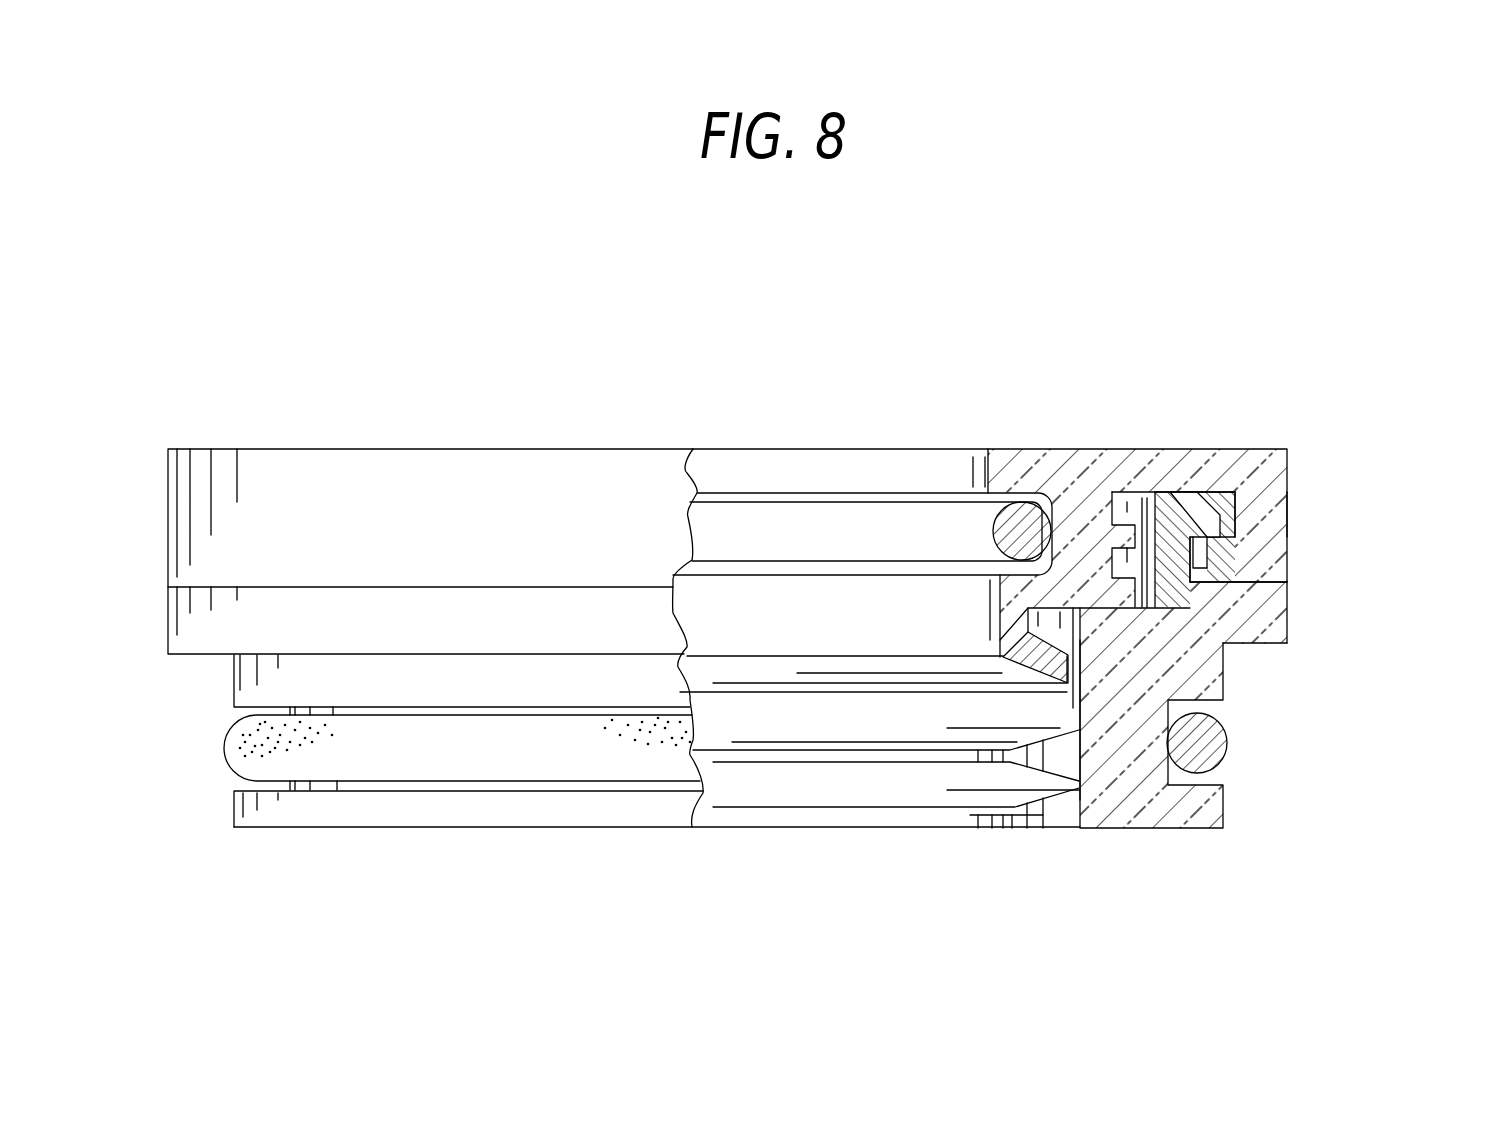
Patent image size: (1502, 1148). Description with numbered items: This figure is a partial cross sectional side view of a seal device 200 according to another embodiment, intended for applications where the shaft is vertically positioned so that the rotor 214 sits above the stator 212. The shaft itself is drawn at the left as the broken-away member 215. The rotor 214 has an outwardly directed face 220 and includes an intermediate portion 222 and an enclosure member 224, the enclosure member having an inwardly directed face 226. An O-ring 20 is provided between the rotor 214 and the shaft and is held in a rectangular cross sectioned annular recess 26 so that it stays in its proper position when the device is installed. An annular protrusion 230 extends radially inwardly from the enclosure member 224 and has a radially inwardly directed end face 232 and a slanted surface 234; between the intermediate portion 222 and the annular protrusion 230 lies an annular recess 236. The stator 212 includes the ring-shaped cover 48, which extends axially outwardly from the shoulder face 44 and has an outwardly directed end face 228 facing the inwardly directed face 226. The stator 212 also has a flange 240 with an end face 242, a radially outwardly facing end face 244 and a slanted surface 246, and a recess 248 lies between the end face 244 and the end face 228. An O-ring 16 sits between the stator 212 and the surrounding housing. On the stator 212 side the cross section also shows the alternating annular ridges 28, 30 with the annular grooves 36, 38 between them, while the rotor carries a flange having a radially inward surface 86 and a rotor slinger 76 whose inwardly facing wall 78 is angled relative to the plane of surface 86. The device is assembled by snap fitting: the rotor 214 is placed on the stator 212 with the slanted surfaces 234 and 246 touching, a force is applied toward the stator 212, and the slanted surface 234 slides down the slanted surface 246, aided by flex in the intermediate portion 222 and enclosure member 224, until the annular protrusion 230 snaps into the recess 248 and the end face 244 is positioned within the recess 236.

The seal device 200 is at (338, 382).
The shaft 215 is at (578, 448).
The rotor 214 is at (880, 460).
The O-ring 20 is at (748, 493).
The annular recess 26 is at (956, 496).
The outwardly directed face 220 is at (1100, 449).
The flange 240 is at (1160, 520).
The end face 242 is at (1222, 512).
The slanted surface 246 is at (1228, 500).
The intermediate portion 222 is at (1180, 492).
The annular recess 236 is at (1250, 497).
The radially outwardly facing end face 244 is at (1240, 532).
The enclosure member 224 is at (1290, 492).
The radially inwardly directed end face 232 is at (1225, 555).
The slanted surface 234 is at (1237, 553).
The inwardly directed face 226 is at (1287, 570).
The cover 48 is at (1287, 617).
The outwardly directed end face 228 is at (1273, 645).
The shoulder face 44 is at (1253, 645).
The annular protrusion 230 is at (1232, 645).
The O-ring 16 is at (1215, 760).
The stator 212 is at (1155, 830).
The recess 248 is at (1132, 716).
The radially inward surface 86 is at (985, 600).
The inwardly facing wall 78 is at (750, 670).
The rotor slinger 76 is at (1017, 640).
The annular groove 38 is at (820, 730).
The annular ridge 30 is at (713, 752).
The annular groove 36 is at (770, 790).
The annular ridge 28 is at (975, 835).